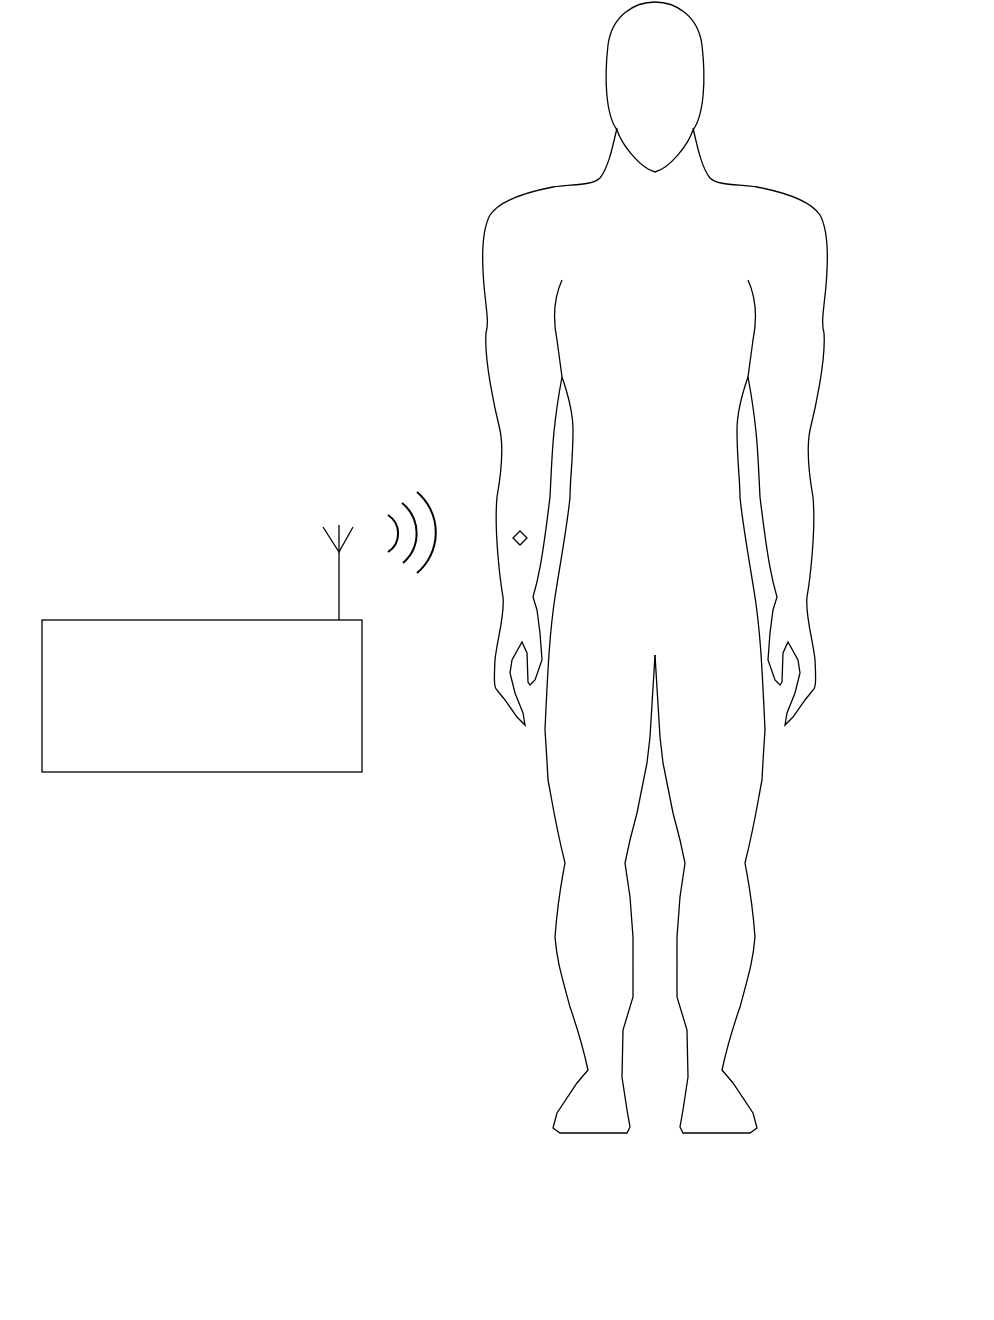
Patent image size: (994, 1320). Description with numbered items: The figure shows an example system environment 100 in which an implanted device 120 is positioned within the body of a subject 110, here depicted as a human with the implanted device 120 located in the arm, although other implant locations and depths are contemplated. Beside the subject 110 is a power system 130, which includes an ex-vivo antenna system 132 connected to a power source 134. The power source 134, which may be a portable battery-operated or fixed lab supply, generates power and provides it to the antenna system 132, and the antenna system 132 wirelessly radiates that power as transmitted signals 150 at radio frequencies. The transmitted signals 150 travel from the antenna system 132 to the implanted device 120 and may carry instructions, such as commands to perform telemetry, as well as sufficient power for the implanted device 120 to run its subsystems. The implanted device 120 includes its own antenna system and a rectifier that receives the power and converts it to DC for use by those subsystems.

The system environment 100 is at (193, 84).
The subject 110 is at (540, 162).
The implanted device 120 is at (522, 520).
The power system 130 is at (127, 461).
The antenna system 132 is at (340, 504).
The power source 134 is at (182, 722).
The transmitted signals 150 is at (407, 470).